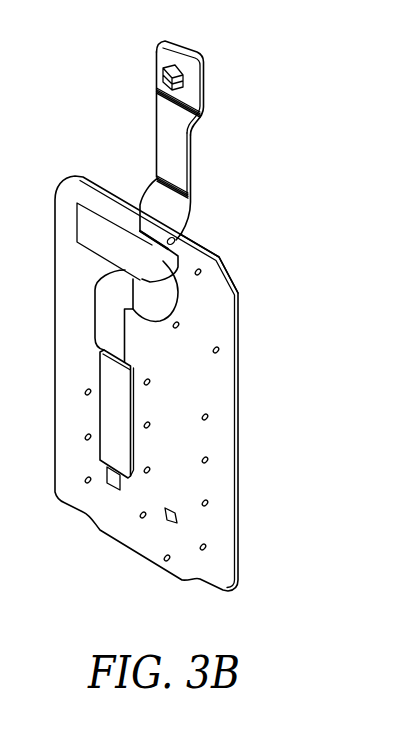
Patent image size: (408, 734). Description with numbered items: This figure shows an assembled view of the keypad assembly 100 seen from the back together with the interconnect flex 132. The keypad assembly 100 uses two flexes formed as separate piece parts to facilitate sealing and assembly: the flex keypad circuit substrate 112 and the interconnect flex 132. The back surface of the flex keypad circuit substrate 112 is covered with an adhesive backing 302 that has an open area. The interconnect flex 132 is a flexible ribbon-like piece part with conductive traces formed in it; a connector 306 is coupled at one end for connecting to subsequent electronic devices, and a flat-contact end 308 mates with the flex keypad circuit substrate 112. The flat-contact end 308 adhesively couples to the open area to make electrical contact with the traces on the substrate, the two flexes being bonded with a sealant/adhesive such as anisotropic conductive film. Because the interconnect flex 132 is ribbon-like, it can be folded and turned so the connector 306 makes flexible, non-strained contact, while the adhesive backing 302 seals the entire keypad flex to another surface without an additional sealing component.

The keypad assembly 100 is at (144, 323).
The flex keypad circuit substrate 112 is at (227, 445).
The interconnect flex 132 is at (156, 148).
The adhesive backing 302 is at (221, 282).
The connector 306 is at (182, 48).
The flat-contact end 308 is at (110, 437).